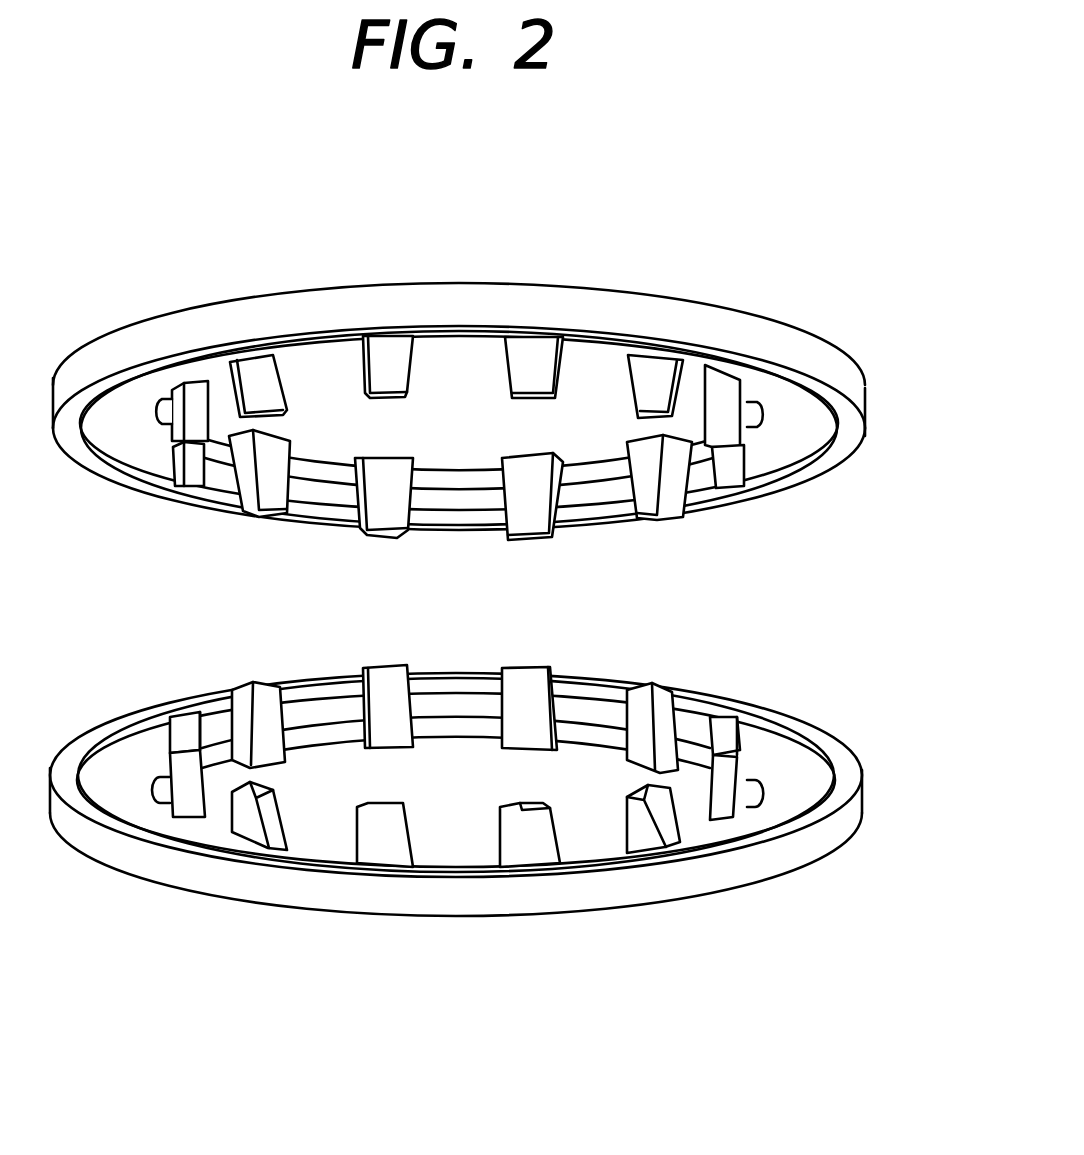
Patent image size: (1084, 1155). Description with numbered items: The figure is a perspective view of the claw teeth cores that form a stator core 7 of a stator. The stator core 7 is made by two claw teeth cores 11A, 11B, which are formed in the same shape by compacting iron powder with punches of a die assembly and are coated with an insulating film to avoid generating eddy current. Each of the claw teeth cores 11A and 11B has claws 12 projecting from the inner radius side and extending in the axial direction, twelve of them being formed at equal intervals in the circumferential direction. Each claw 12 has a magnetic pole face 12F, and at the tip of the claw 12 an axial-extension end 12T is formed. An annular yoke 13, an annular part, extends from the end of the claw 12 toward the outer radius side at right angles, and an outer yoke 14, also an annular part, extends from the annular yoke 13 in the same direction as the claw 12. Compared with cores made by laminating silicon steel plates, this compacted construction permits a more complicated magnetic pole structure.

The stator core 7 is at (500, 540).
The claw teeth core 11A is at (611, 288).
The claw teeth core 11B is at (755, 893).
The claw 12 is at (496, 370).
The axial-extension end 12T is at (385, 397).
The magnetic pole face 12F is at (383, 503).
The annular yoke 13 is at (797, 417).
The outer yoke 14 is at (848, 463).